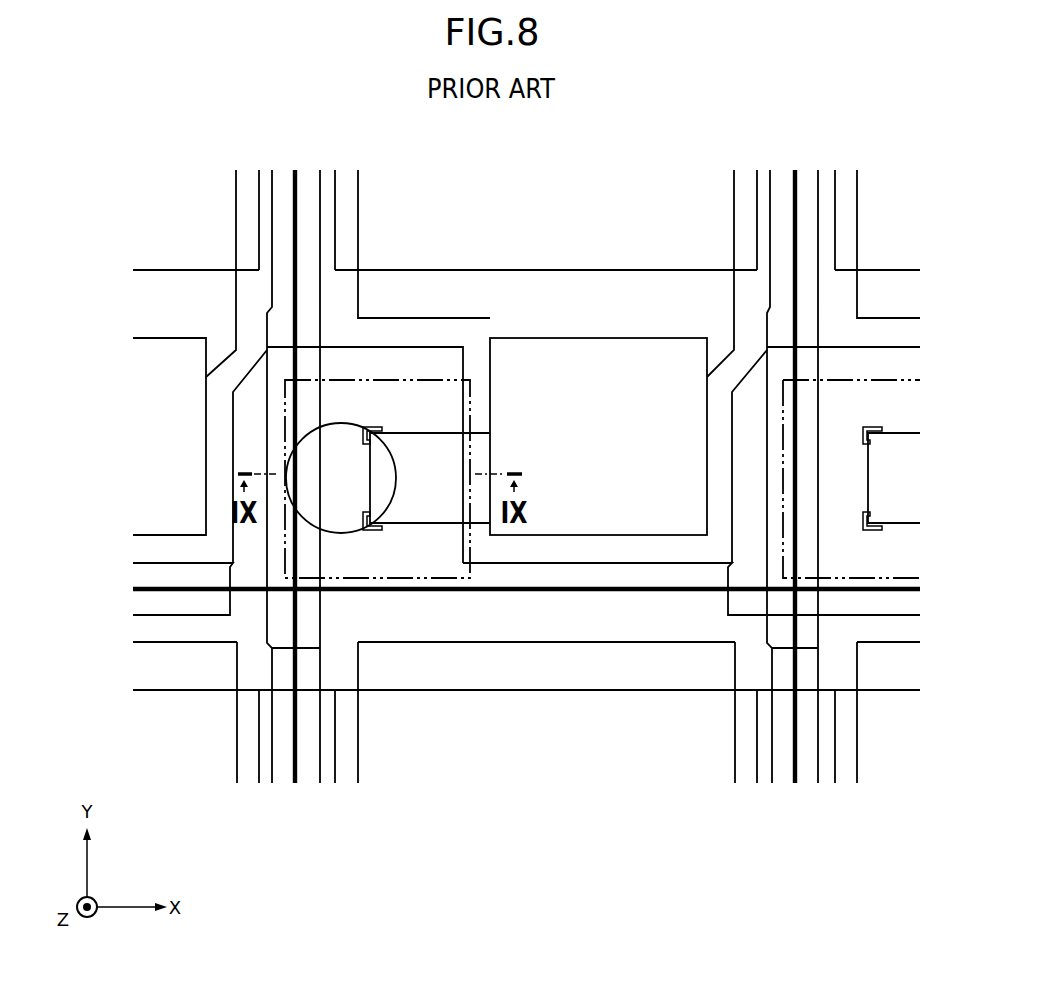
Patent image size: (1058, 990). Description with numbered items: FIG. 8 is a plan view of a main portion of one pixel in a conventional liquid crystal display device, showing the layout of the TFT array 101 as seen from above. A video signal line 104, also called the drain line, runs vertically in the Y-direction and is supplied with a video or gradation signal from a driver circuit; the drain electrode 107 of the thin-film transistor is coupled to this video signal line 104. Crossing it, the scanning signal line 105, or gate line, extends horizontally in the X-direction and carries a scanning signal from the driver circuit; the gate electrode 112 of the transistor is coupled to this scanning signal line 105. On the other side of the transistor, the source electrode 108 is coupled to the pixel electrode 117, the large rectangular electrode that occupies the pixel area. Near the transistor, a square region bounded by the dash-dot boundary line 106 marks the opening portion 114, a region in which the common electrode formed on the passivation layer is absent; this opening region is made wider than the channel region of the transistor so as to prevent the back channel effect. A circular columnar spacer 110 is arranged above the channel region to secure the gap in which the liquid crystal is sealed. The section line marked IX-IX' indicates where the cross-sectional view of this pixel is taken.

The TFT array 101 is at (659, 158).
The video signal line 104 is at (272, 162).
The scanning signal line 105 is at (118, 559).
The boundary line 106 is at (470, 413).
The drain electrode 107 is at (308, 457).
The source electrode 108 is at (425, 510).
The columnar spacer 110 is at (397, 462).
The gate electrode 112 is at (247, 425).
The opening portion 114 is at (450, 398).
The pixel electrode 117 is at (620, 355).